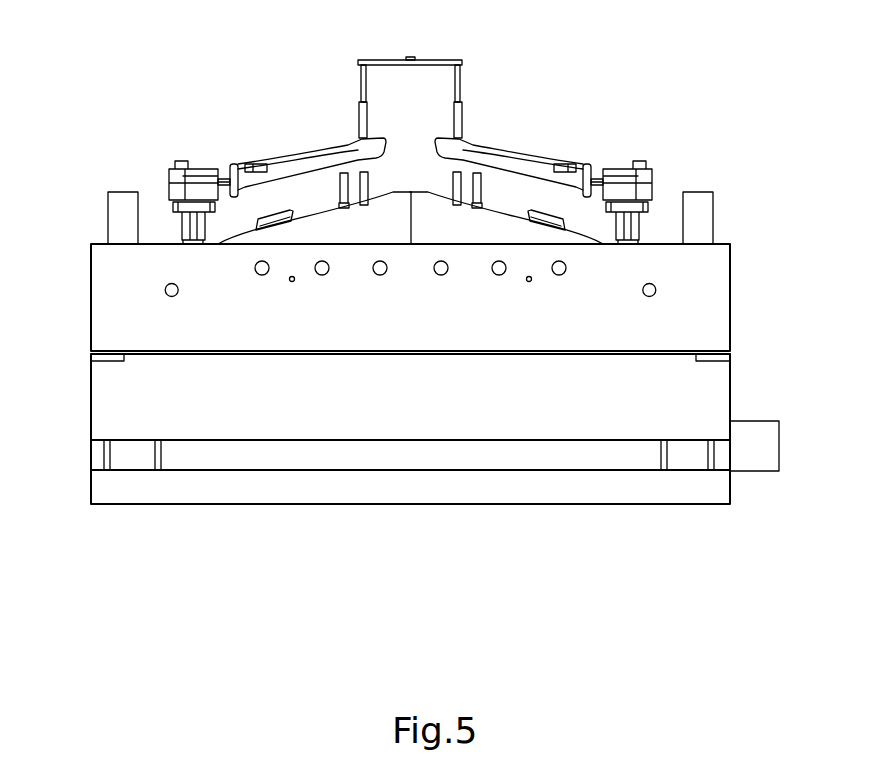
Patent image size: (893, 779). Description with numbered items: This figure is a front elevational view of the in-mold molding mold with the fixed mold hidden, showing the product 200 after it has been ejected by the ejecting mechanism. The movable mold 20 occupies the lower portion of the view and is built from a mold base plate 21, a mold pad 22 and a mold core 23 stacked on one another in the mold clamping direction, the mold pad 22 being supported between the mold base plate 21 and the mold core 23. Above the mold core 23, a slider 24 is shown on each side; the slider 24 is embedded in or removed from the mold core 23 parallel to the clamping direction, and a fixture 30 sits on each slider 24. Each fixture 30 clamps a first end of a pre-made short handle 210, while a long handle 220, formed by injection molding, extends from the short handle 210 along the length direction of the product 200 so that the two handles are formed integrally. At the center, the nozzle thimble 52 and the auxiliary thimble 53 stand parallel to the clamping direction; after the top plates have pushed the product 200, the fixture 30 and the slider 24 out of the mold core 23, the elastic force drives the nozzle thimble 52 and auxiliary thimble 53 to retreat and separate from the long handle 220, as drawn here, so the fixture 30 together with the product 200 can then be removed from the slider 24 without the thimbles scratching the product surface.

The movable mold 20 is at (845, 310).
The mold base plate 21 is at (716, 488).
The mold pad 22 is at (713, 402).
The mold core 23 is at (716, 269).
The slider 24 is at (185, 227).
The fixture 30 is at (177, 190).
The nozzle thimble 52 is at (363, 172).
The auxiliary thimble 53 is at (342, 180).
The product 200 is at (205, 46).
The short handle 210 is at (222, 182).
The long handle 220 is at (250, 164).